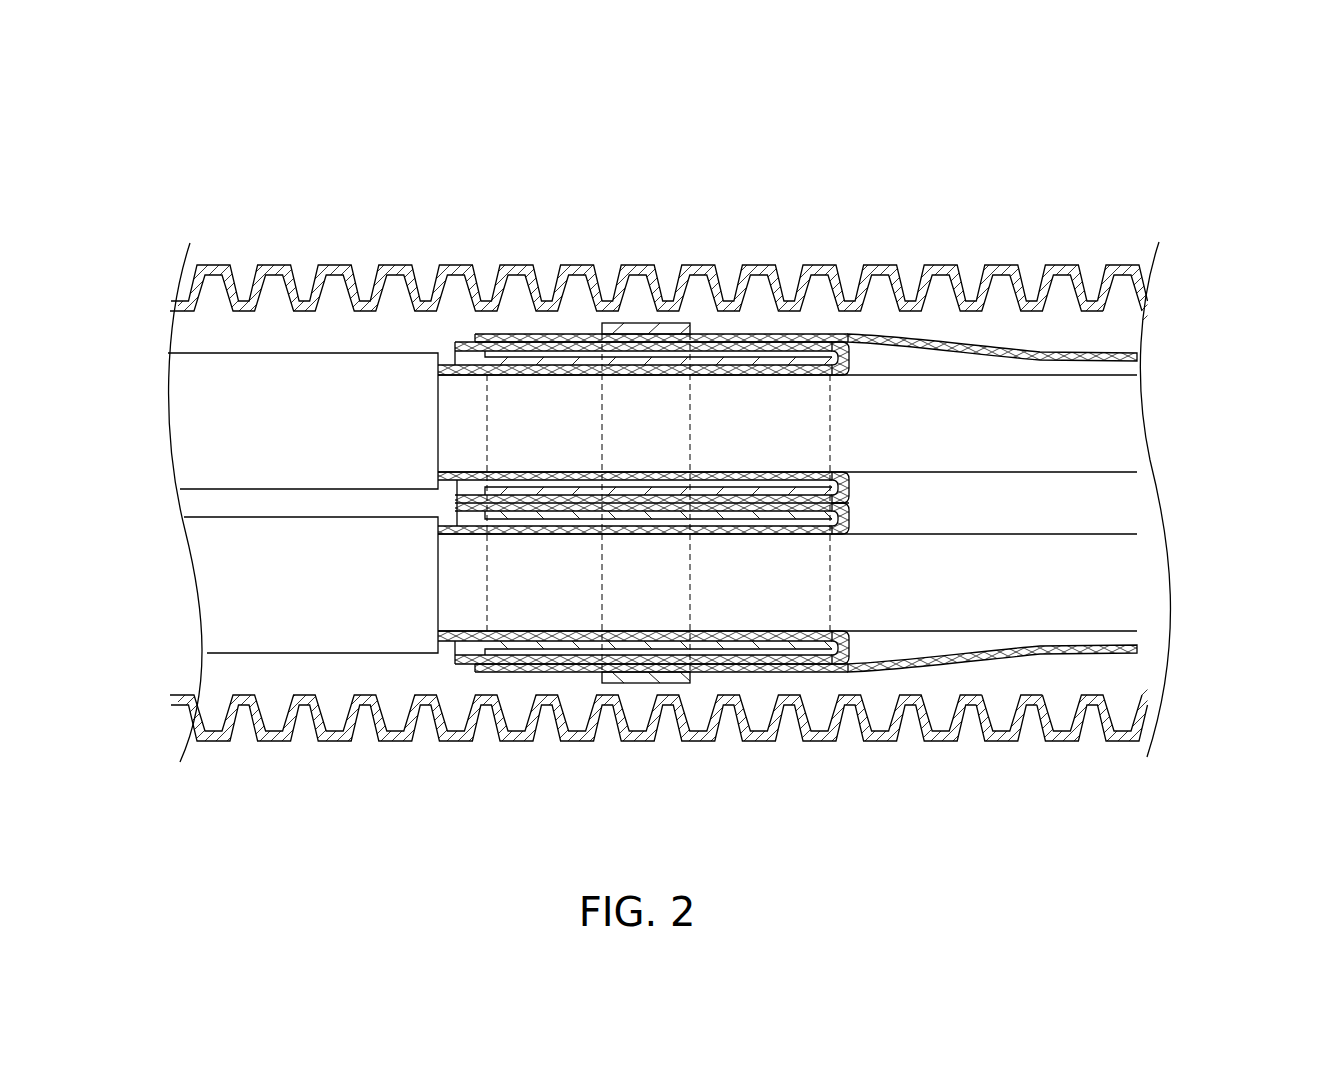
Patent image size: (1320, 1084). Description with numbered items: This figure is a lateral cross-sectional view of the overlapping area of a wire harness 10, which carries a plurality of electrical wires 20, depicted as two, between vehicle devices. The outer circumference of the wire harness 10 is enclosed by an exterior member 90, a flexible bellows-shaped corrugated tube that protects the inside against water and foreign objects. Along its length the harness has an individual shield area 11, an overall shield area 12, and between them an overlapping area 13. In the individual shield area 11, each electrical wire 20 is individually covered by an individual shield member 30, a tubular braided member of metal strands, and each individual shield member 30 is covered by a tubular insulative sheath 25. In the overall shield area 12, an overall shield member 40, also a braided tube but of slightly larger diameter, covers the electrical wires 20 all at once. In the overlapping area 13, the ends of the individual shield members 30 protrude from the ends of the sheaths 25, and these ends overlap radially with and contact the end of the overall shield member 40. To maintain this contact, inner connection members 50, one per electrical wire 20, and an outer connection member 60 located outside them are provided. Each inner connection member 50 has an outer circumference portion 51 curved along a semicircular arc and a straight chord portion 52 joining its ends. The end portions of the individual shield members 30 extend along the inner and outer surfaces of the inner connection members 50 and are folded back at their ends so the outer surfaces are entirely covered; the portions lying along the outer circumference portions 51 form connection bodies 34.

The wire harness 10 is at (679, 148).
The individual shield area 11 is at (275, 263).
The overall shield area 12 is at (1122, 265).
The overlapping area 13 is at (567, 741).
The electrical wire 20 is at (1137, 424).
The sheath 25 is at (336, 393).
The individual shield member 30 is at (656, 504).
The connection body 34 is at (735, 356).
The overall shield member 40 is at (972, 345).
The inner connection member 50 is at (793, 346).
The outer circumference portion 51 is at (516, 366).
The chord portion 52 is at (813, 488).
The outer connection member 60 is at (640, 322).
The exterior member 90 is at (1013, 742).